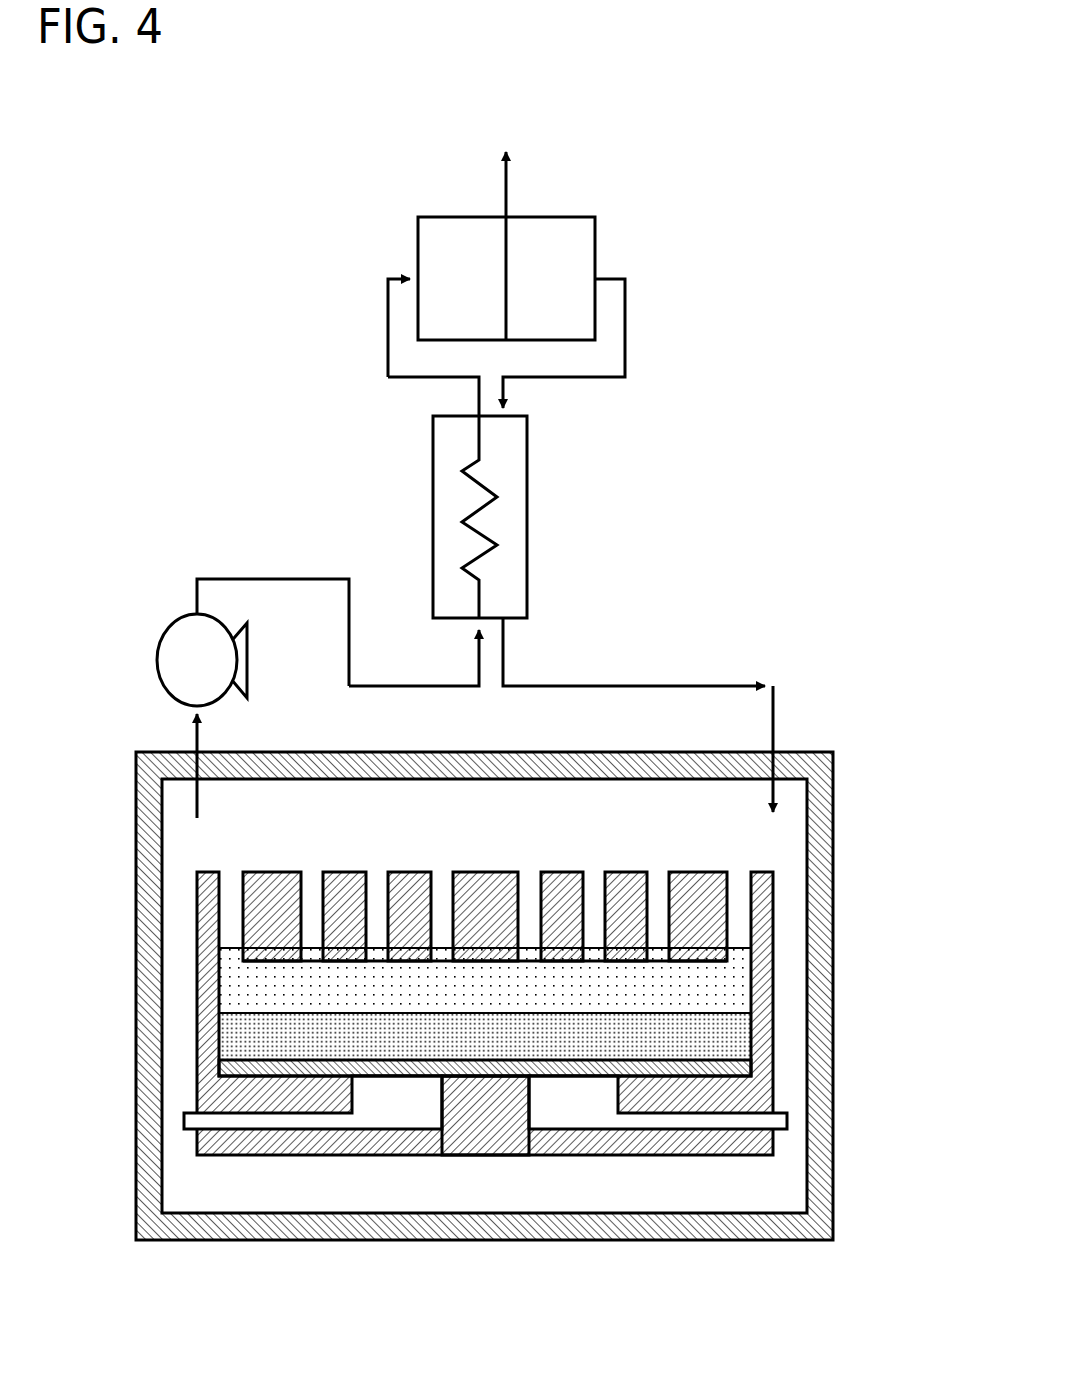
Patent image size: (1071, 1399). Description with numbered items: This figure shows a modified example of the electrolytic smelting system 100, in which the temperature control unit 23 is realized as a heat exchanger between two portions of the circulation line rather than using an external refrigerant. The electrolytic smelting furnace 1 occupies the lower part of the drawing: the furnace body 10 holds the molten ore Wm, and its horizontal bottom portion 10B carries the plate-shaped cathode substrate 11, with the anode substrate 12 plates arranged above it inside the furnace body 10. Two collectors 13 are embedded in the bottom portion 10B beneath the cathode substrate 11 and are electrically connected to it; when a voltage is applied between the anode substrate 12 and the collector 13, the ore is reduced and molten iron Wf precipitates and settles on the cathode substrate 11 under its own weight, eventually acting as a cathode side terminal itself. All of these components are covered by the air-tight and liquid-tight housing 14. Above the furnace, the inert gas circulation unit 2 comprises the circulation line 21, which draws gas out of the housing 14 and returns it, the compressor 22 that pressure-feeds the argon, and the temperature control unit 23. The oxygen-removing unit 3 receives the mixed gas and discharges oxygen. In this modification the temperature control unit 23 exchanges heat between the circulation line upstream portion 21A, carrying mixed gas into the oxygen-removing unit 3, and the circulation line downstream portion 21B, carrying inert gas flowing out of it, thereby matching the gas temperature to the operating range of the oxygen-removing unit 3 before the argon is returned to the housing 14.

The electrolytic smelting system 100 is at (188, 222).
The electrolytic smelting furnace 1 is at (841, 852).
The inert gas circulation unit 2 is at (727, 484).
The oxygen-removing unit 3 is at (566, 217).
The furnace body 10 is at (758, 986).
The bottom portion 10B is at (482, 1107).
The cathode substrate 11 is at (281, 1068).
The anode substrate 12 is at (250, 872).
The collector 13 is at (403, 1120).
The housing 14 is at (822, 1087).
The circulation line 21 is at (773, 708).
The circulation line upstream portion 21A is at (388, 338).
The circulation line downstream portion 21B is at (625, 340).
The compressor 22 is at (157, 660).
The temperature control unit 23 is at (433, 475).
The molten ore Wm is at (227, 937).
The molten iron Wf is at (227, 997).